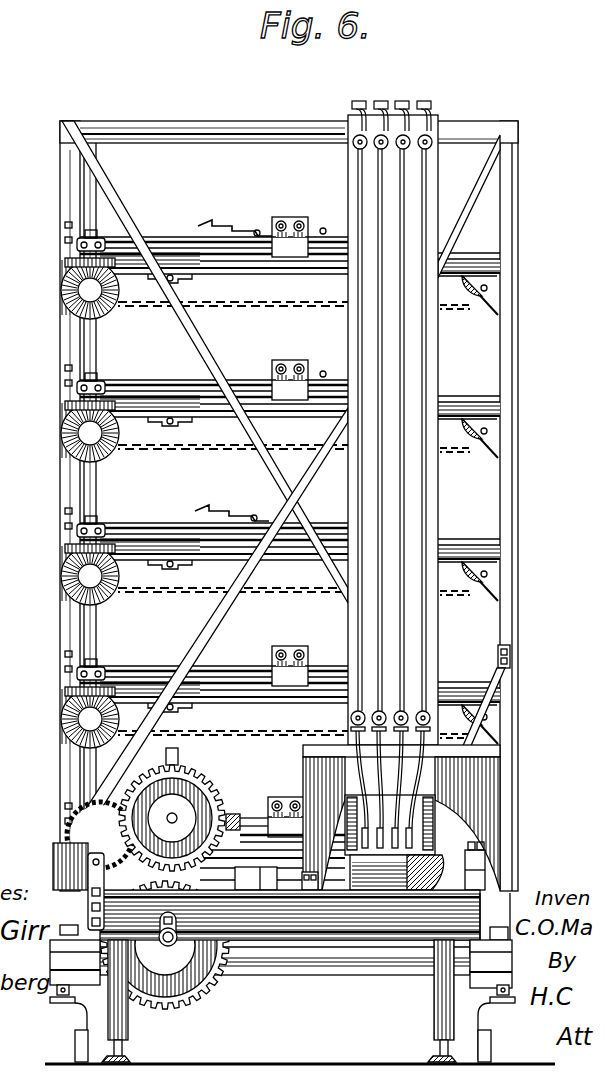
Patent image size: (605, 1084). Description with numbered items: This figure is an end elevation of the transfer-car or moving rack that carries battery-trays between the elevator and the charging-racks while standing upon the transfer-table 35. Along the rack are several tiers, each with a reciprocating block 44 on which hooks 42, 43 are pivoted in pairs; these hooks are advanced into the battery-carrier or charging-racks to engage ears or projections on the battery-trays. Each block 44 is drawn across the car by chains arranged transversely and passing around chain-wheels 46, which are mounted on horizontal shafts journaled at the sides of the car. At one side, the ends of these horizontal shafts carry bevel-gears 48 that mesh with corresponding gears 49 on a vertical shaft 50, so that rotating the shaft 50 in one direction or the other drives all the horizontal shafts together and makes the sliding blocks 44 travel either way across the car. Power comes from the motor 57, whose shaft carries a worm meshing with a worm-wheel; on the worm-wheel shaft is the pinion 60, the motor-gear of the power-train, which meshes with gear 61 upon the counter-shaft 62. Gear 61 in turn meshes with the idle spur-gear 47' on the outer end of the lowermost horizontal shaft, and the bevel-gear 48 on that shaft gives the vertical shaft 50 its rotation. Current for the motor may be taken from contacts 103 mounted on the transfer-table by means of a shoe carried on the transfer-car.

The transfer-table 35 is at (160, 125).
The hook 42 is at (232, 222).
The hook 43 is at (320, 220).
The reciprocating block 44 is at (288, 370).
The chain-wheel 46 is at (487, 592).
The spur-gear 47' is at (54, 890).
The bevel-gear 48 is at (68, 292).
The bevel-gear 49 is at (72, 265).
The vertical shaft 50 is at (107, 491).
The motor 57 is at (440, 858).
The pinion 60 is at (190, 795).
The gear 61 is at (212, 978).
The counter-shaft 62 is at (180, 942).
The contact 103 is at (68, 1005).